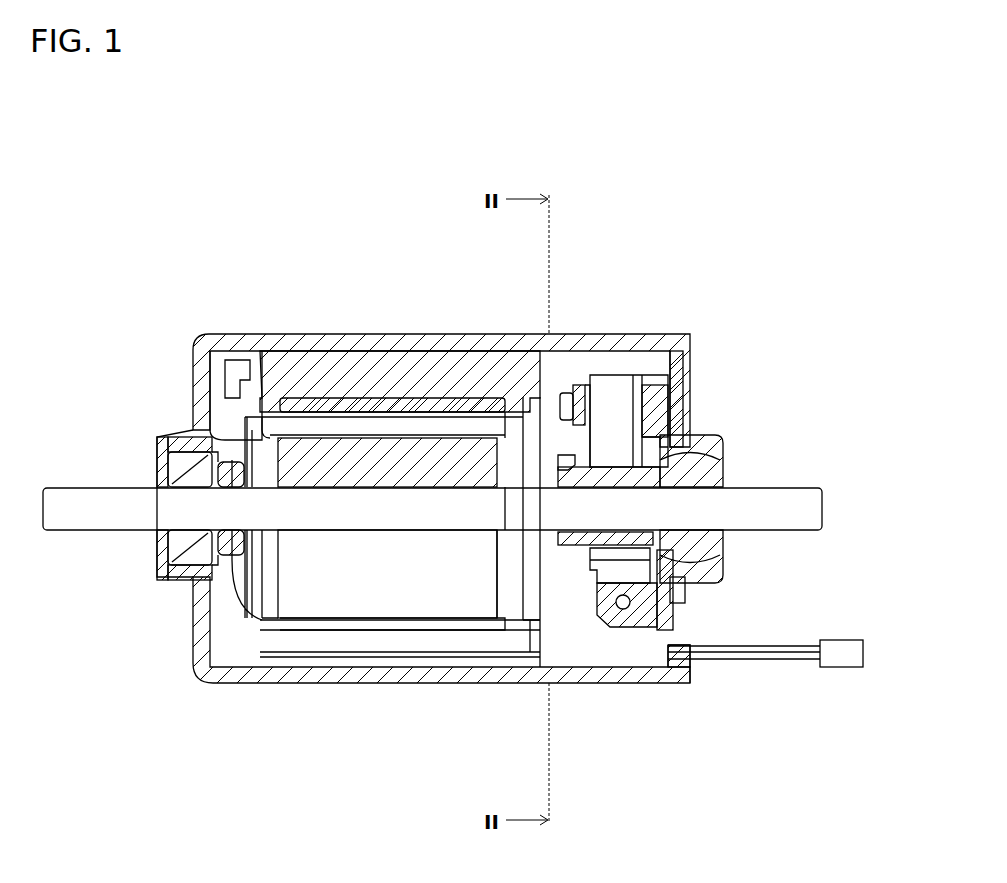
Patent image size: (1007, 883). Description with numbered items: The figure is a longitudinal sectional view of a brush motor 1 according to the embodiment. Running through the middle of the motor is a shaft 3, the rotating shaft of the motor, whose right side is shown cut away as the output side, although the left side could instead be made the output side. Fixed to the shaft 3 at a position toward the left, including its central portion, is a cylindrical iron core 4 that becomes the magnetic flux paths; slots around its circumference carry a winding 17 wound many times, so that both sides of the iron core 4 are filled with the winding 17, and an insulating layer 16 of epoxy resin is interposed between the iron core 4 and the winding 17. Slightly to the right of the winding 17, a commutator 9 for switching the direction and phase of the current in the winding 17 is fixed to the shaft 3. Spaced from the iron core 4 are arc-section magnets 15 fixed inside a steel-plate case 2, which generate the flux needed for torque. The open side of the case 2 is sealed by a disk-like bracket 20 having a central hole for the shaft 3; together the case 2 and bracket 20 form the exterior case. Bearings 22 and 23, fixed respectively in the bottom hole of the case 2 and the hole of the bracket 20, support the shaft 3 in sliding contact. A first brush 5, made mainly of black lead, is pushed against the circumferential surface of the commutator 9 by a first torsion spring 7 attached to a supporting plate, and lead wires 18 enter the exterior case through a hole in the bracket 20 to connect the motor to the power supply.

The brush motor 1 is at (396, 211).
The case 2 is at (272, 340).
The shaft 3 is at (100, 497).
The iron core 4 is at (364, 460).
The first brush 5 is at (622, 428).
The first torsion spring 7 is at (577, 380).
The commutator 9 is at (640, 447).
The magnets 15 is at (421, 375).
The insulating layer 16 is at (525, 470).
The winding 17 is at (265, 580).
The lead wires 18 is at (745, 662).
The bracket 20 is at (680, 392).
The bearing 22 is at (160, 548).
The bearing 23 is at (690, 485).